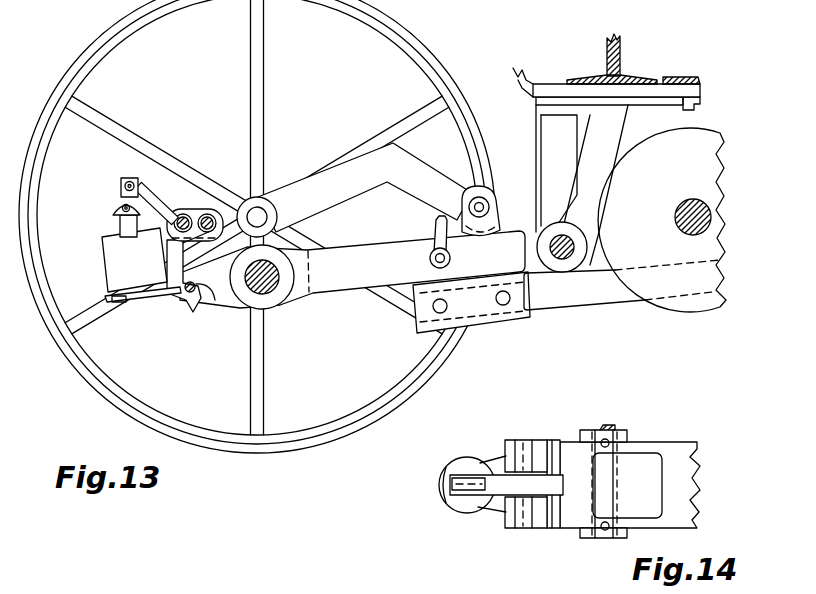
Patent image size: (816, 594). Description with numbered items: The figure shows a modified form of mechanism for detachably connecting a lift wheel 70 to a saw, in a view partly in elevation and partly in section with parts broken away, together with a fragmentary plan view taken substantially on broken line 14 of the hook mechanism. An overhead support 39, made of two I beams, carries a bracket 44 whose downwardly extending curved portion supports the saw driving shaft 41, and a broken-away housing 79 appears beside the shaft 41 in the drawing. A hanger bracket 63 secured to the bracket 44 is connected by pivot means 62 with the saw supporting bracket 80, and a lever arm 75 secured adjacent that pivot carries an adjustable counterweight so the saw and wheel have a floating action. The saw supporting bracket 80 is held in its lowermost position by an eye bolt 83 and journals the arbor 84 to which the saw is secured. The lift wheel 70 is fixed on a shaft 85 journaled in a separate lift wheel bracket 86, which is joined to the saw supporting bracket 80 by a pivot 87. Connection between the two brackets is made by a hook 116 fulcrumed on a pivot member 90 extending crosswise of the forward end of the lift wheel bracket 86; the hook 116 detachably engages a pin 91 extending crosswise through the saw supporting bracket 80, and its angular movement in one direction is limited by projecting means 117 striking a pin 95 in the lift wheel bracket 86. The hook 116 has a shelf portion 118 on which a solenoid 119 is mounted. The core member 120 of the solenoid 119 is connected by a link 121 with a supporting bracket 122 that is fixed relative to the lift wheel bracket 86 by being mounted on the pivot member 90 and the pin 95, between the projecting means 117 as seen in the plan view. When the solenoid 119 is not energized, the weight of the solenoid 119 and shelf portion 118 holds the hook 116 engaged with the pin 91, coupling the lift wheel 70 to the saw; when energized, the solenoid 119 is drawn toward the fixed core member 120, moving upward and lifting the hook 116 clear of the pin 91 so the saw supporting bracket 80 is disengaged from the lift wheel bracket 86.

In FIG. 13, the lift wheel 70 is at (107, 39).
In FIG. 13, the broken line 14— 14 is at (272, 155).
In FIG. 13, the link 121 is at (114, 194).
In FIG. 13, the core member 120 is at (118, 222).
In FIG. 13, the solenoid 119 is at (112, 258).
In FIG. 14, the solenoid 119 is at (467, 492).
In FIG. 13, the shelf portion 118 is at (123, 302).
In FIG. 14, the shelf portion 118 is at (501, 462).
In FIG. 13, the hook 116 is at (172, 300).
In FIG. 13, the pin 91 is at (219, 293).
In FIG. 13, the supporting bracket 122 is at (151, 185).
In FIG. 14, the supporting bracket 122 is at (489, 490).
In FIG. 13, the pivot member 90 is at (190, 212).
In FIG. 13, the projecting means 117 is at (213, 212).
In FIG. 14, the projecting means 117 is at (537, 462).
In FIG. 13, the pin 95 is at (221, 209).
In FIG. 14, the pin 95 is at (552, 520).
In FIG. 13, the shaft 85 is at (258, 217).
In FIG. 14, the shaft 85 is at (606, 487).
In FIG. 13, the lift wheel bracket 86 is at (336, 172).
In FIG. 14, the lift wheel bracket 86 is at (680, 491).
In FIG. 13, the pivot 87 is at (470, 196).
In FIG. 13, the eye bolt 83 is at (432, 229).
In FIG. 13, the arbor 84 is at (266, 293).
In FIG. 13, the saw supporting bracket 80 is at (362, 283).
In FIG. 13, the lever arm 75 is at (586, 298).
In FIG. 13, the pivot means 62 is at (562, 242).
In FIG. 13, the hanger bracket 63 is at (545, 128).
In FIG. 13, the housing 79 is at (708, 138).
In FIG. 13, the saw driving shaft 41 is at (693, 200).
In FIG. 13, the bracket 44 is at (558, 90).
In FIG. 13, the overhead support 39 is at (619, 57).